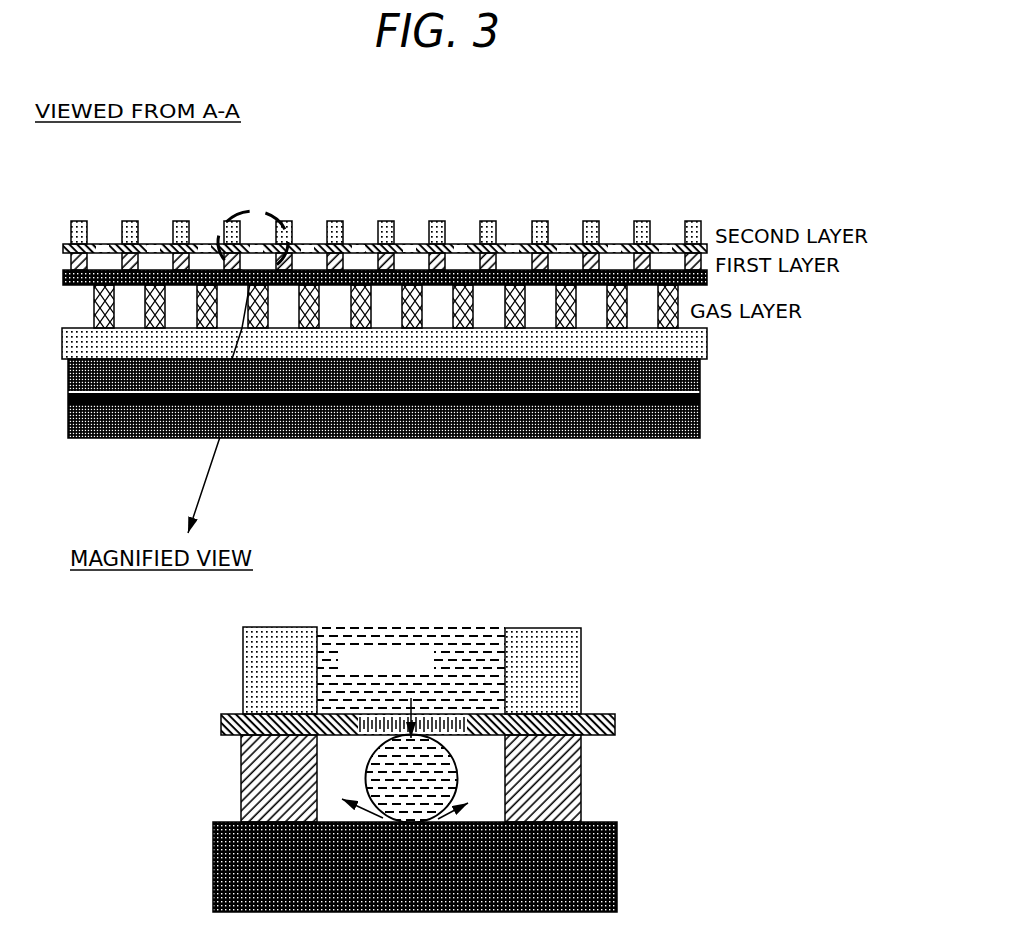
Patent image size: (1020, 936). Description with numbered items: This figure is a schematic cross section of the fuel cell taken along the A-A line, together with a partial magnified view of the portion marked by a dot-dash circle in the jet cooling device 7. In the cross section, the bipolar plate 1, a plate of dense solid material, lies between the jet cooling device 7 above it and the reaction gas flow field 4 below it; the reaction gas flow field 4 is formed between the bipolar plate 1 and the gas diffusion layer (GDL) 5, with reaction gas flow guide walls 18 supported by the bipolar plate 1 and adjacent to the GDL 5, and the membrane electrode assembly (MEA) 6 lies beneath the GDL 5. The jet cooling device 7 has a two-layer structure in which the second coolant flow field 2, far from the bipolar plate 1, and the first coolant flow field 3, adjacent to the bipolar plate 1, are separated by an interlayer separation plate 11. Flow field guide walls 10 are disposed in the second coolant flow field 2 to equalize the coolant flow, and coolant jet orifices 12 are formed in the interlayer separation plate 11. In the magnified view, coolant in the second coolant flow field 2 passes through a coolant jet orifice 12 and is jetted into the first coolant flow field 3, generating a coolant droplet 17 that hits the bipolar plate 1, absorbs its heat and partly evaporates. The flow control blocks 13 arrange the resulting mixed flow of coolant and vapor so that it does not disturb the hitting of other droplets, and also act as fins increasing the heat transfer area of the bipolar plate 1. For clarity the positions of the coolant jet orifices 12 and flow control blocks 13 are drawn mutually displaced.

The bipolar plate 1 is at (514, 273).
The second coolant flow field 2 is at (462, 242).
The first coolant flow field 3 is at (614, 265).
The reaction gas flow field 4 is at (439, 315).
The gas diffusion layer (GDL) 5 is at (384, 343).
The membrane electrode assembly (MEA) 6 is at (384, 398).
The jet cooling device 7 is at (873, 222).
The flow field guide wall 10 is at (183, 228).
The interlayer separation plate 11 is at (358, 250).
The coolant jet orifice 12 is at (157, 250).
The flow control block 13 is at (70, 258).
The coolant droplet 17 is at (365, 772).
The reaction gas flow guide wall 18 is at (567, 317).